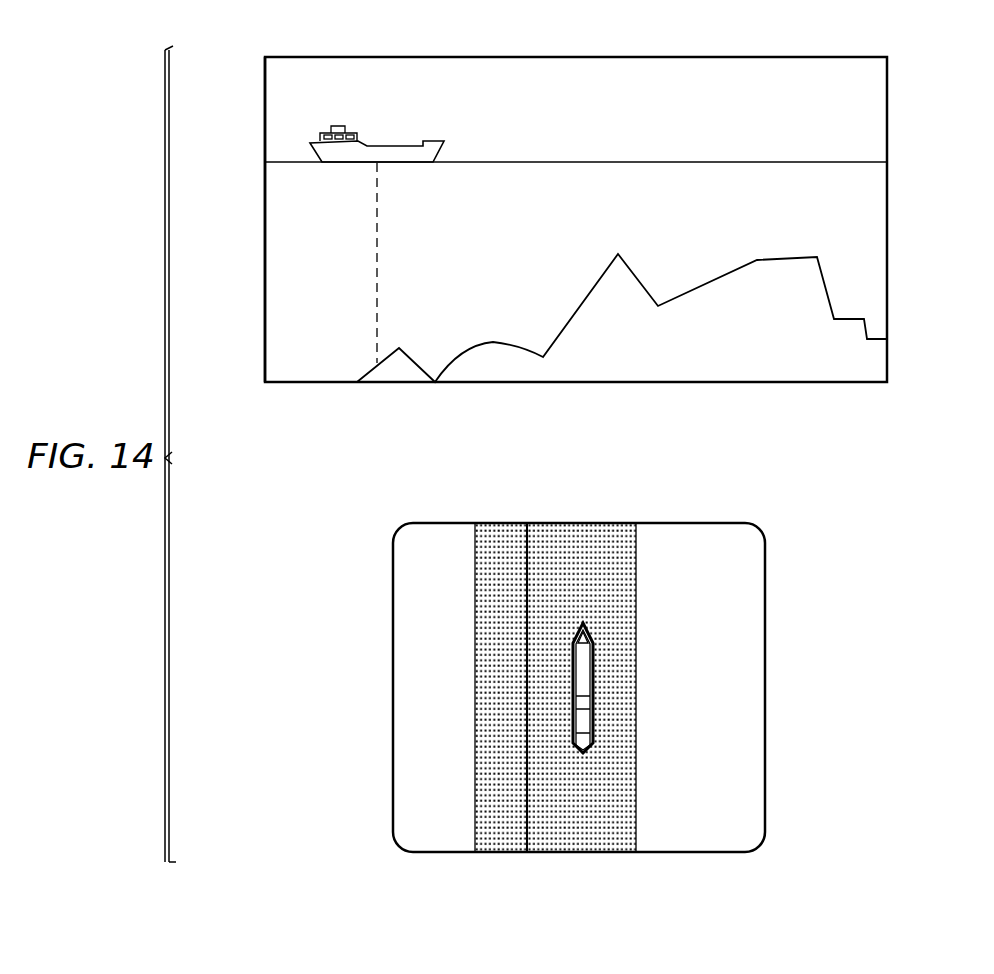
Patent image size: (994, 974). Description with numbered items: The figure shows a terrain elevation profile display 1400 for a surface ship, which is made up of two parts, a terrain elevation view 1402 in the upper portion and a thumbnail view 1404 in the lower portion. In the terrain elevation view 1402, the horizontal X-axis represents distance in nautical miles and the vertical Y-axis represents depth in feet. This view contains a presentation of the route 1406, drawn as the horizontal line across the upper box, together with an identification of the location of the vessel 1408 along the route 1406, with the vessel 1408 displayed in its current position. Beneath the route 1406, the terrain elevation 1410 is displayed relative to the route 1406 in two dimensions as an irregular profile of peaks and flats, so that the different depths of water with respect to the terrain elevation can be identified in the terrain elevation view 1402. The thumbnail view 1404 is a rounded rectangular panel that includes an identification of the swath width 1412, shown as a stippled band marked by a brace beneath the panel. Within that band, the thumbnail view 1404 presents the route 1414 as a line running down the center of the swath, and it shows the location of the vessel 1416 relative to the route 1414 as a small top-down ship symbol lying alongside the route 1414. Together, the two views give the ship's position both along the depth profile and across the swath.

The display 1400 is at (740, 56).
The terrain elevation view 1402 is at (265, 120).
The thumbnail view 1404 is at (766, 632).
The route 1406 is at (538, 160).
The vessel 1408 is at (385, 143).
The terrain elevation 1410 is at (662, 264).
The swath width 1412 is at (638, 858).
The route 1414 is at (523, 535).
The vessel 1416 is at (596, 703).